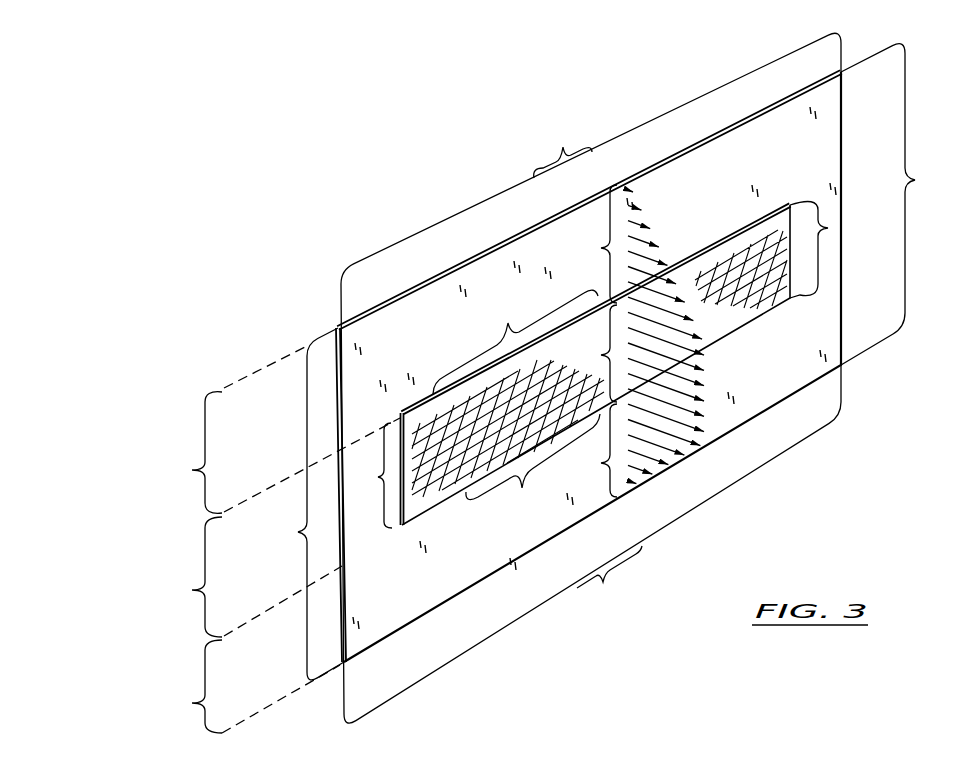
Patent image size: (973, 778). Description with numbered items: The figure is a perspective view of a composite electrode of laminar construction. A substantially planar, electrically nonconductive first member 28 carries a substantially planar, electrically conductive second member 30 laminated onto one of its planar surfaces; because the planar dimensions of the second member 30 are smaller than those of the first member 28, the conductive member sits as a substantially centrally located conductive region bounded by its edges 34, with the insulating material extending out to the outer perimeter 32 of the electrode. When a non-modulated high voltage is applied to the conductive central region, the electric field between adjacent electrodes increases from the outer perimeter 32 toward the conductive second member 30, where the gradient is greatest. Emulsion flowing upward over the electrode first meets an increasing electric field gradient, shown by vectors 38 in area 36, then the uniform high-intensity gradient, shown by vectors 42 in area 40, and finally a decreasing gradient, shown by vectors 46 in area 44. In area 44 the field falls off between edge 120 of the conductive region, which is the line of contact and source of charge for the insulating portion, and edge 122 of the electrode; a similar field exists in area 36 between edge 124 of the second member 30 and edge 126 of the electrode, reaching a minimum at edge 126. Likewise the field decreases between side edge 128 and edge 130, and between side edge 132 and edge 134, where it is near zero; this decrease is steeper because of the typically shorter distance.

The first member 28 is at (533, 250).
The second member 30 is at (750, 316).
The outer perimeter 32 is at (430, 281).
The coated region edge 34 is at (725, 241).
The area 36 is at (192, 703).
The vectors 38 is at (603, 463).
The area 40 is at (192, 590).
The vectors 42 is at (601, 355).
The area 44 is at (192, 470).
The vectors 46 is at (601, 248).
The edge 120 is at (515, 342).
The edge 122 is at (563, 149).
The edge 124 is at (533, 464).
The edge 126 is at (609, 579).
The edge 128 is at (378, 477).
The edge 130 is at (298, 532).
The edge 132 is at (828, 228).
The edge 134 is at (915, 180).